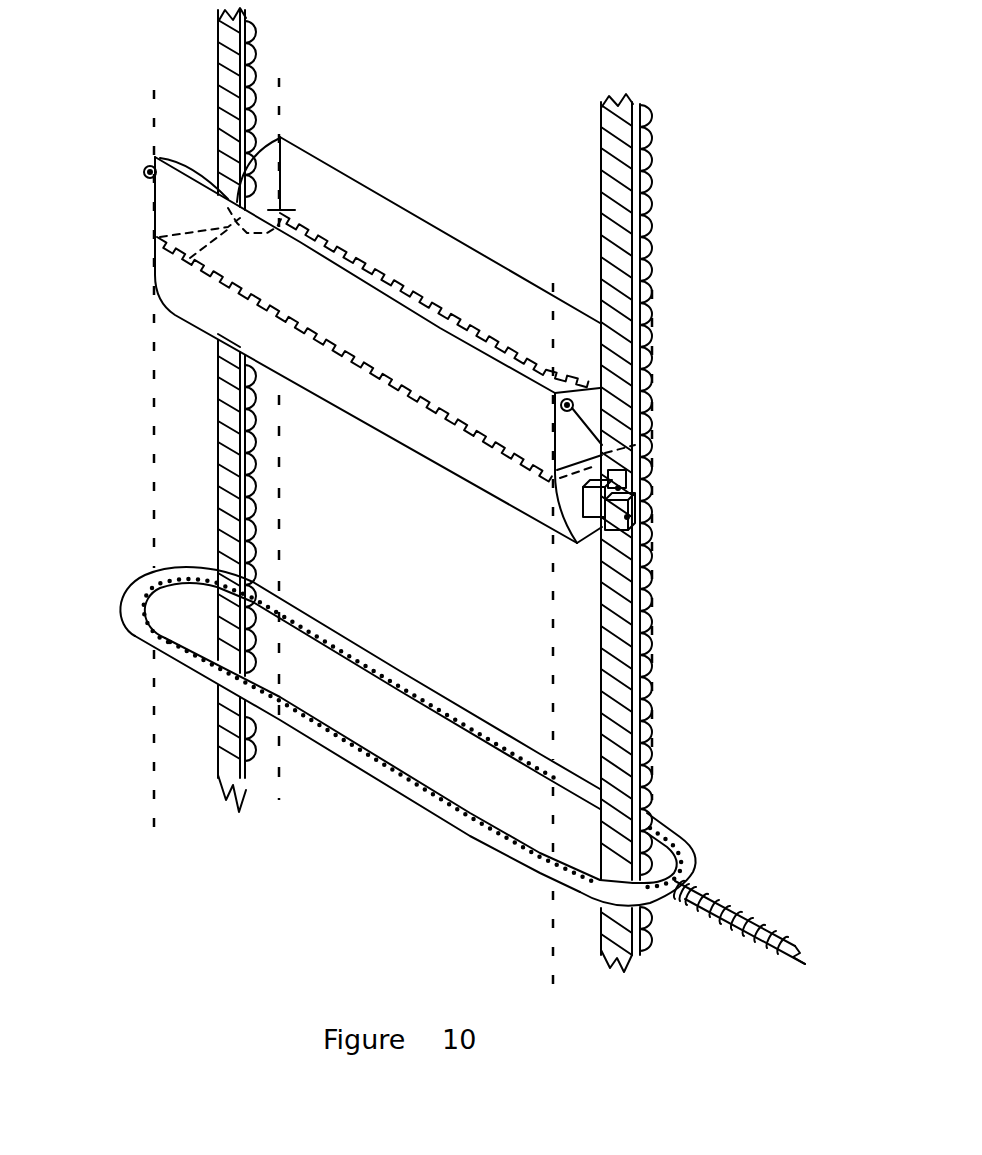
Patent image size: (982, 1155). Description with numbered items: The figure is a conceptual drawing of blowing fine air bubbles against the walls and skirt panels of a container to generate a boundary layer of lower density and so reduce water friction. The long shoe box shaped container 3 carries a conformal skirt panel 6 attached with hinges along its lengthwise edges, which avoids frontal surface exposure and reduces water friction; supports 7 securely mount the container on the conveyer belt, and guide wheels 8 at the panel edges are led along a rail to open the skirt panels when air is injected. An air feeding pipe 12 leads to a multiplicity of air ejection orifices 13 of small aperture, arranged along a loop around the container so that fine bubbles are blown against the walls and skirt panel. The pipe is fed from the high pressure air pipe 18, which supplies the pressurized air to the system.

The shoe box shaped container 3 is at (210, 295).
The conformal skirt panel 6 is at (175, 202).
The support 7 is at (633, 510).
The guide wheel 8 is at (150, 164).
The air feeding pipe 12 is at (687, 850).
The air ejection orifices 13 is at (148, 643).
The high pressure air pipe 18 is at (773, 930).